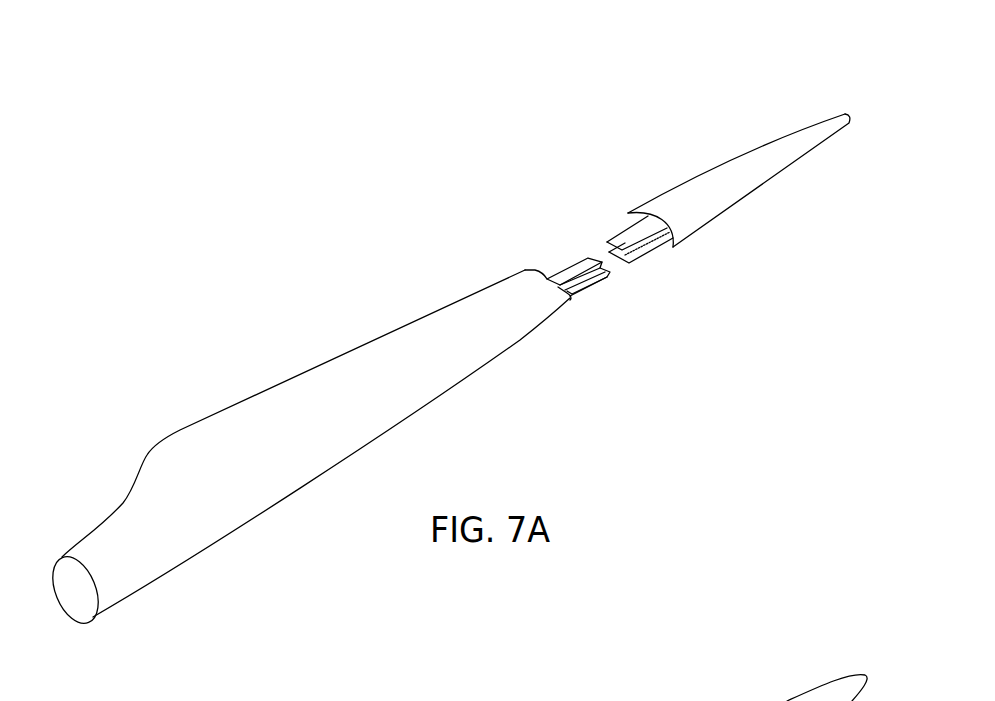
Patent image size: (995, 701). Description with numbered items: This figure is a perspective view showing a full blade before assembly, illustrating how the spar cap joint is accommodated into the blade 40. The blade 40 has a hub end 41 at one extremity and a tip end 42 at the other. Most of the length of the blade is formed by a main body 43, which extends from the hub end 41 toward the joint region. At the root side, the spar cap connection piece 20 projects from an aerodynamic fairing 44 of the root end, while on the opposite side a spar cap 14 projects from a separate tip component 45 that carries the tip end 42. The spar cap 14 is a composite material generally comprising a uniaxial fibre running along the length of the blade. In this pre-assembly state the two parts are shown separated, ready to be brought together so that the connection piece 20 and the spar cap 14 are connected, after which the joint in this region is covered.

The blade 40 is at (405, 304).
The hub end 41 is at (92, 639).
The tip end 42 is at (843, 104).
The main body 43 is at (318, 468).
The aerodynamic fairing 44 is at (289, 383).
The tip component 45 is at (745, 163).
The spar cap connection piece 20 is at (573, 262).
The spar cap 14 is at (618, 235).